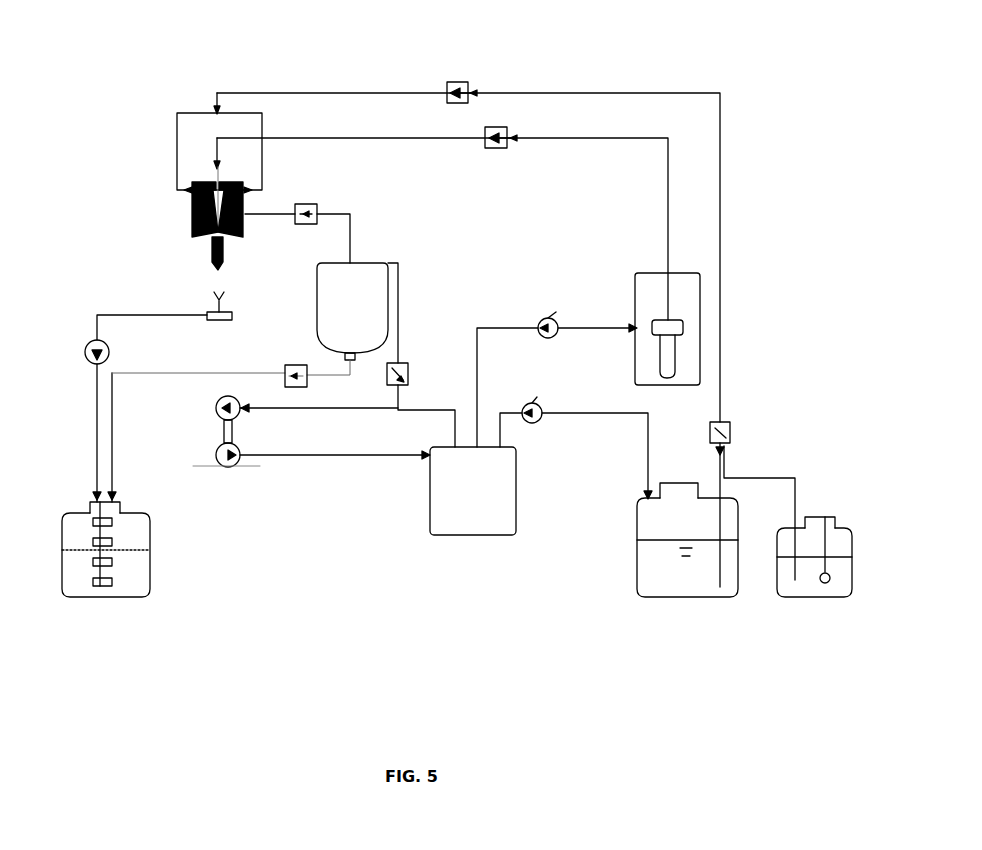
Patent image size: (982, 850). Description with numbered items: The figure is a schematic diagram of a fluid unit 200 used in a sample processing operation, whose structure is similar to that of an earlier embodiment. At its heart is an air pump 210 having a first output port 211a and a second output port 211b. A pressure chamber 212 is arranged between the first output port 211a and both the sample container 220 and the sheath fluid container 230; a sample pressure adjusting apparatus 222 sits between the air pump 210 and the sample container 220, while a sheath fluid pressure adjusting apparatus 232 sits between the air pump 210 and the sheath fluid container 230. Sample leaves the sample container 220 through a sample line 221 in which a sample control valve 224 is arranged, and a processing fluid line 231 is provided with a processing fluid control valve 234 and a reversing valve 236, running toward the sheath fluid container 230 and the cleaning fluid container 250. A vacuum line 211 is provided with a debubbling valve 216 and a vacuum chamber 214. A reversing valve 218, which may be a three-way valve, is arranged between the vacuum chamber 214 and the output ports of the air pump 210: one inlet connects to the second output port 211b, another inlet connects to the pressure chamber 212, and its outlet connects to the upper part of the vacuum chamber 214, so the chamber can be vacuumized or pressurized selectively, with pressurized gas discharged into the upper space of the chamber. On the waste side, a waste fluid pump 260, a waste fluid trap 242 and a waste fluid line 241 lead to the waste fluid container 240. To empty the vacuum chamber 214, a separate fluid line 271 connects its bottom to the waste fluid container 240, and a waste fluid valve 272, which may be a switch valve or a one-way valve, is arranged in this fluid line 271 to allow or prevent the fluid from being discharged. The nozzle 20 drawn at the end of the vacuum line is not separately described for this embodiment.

The fluid unit 200 is at (556, 68).
The nozzle 20 is at (180, 240).
The air pump 210 is at (302, 439).
The vacuum line 211 is at (350, 243).
The first output port 211a is at (226, 471).
The second output port 211b is at (235, 400).
The pressure chamber 212 is at (473, 491).
The vacuum chamber 214 is at (357, 313).
The debubbling valve 216 is at (302, 200).
The reversing valve 218 is at (421, 405).
The sample container 220 is at (667, 329).
The sample line 221 is at (668, 193).
The sample pressure adjusting apparatus 222 is at (557, 370).
The sample control valve 224 is at (498, 151).
The sheath fluid container 230 is at (687, 553).
The processing fluid line 231 is at (722, 143).
The sheath fluid pressure adjusting apparatus 232 is at (576, 448).
The processing fluid control valve 234 is at (461, 81).
The reversing valve 236 is at (752, 501).
The waste fluid container 240 is at (106, 563).
The waste fluid line 241 is at (97, 432).
The waste fluid trap 242 is at (220, 319).
The cleaning fluid container 250 is at (814, 569).
The waste fluid pump 260 is at (123, 341).
The fluid line 271 is at (112, 390).
The waste fluid valve 272 is at (303, 360).